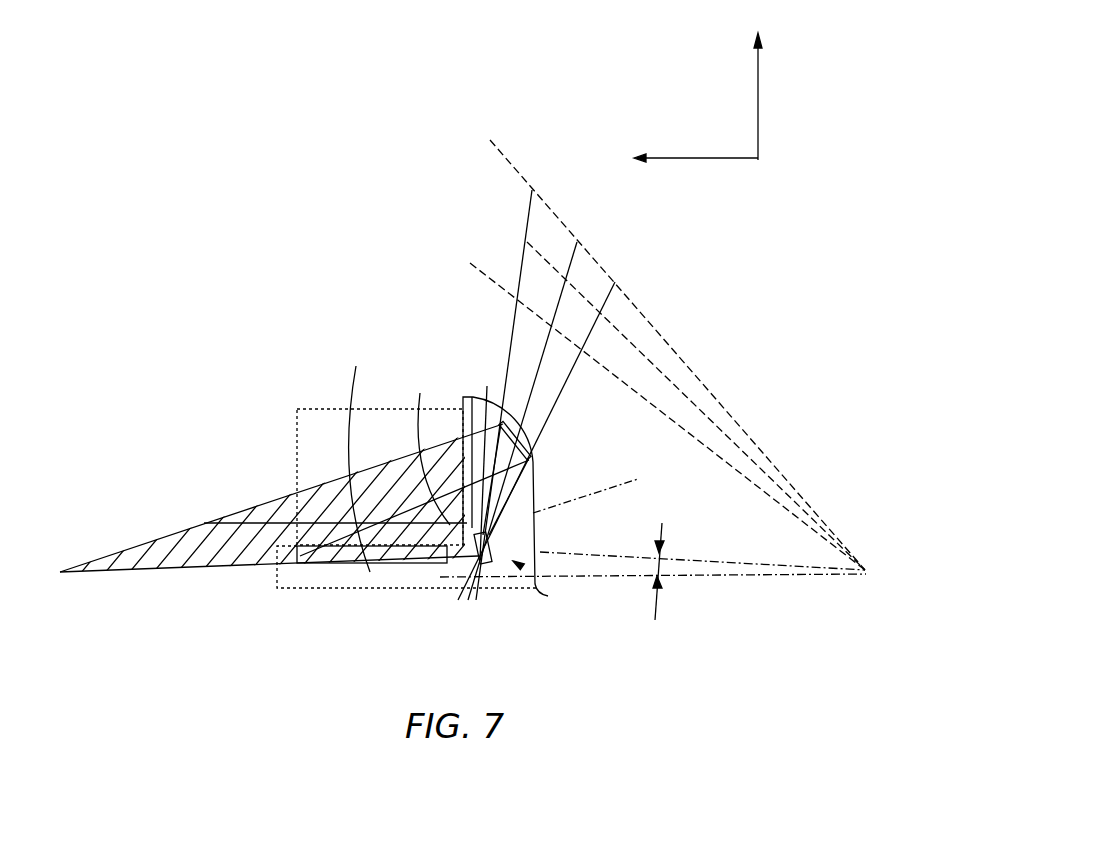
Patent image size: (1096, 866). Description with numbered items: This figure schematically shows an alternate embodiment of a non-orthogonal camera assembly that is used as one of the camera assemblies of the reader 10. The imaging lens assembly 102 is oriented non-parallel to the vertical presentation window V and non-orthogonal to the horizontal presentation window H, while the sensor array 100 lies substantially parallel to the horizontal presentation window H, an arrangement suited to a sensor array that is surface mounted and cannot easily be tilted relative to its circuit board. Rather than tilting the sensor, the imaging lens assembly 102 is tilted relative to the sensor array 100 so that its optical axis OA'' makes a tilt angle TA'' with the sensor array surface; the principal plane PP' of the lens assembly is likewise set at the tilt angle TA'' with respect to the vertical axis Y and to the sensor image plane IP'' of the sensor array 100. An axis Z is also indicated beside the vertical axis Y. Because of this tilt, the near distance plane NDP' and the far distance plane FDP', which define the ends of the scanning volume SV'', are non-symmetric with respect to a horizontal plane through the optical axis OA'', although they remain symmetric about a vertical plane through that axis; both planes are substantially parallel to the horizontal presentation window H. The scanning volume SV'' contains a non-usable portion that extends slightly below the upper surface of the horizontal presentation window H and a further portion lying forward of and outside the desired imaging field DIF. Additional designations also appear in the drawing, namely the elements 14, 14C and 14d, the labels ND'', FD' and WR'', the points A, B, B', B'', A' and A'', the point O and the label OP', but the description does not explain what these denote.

The reader 10 is at (544, 496).
The optical element 14 is at (531, 496).
The optical element portion 14C is at (393, 584).
The surface of optical element 14d is at (530, 488).
The sensor array 100 is at (544, 409).
The imaging lens assembly 102 is at (507, 552).
The desired imaging field DIF is at (297, 409).
The near distance plane NDP' is at (359, 458).
The optical axis OA'' is at (430, 448).
The near distance ND'' is at (414, 492).
The scanning volume SV'' is at (326, 523).
The far distance plane FDP' is at (326, 523).
The far distance FD' is at (368, 584).
The wave retarder WR'' is at (361, 593).
The point B'' is at (316, 497).
The ray B' is at (492, 395).
The ray A' is at (558, 427).
The line A'' is at (596, 489).
The vertical presentation window V is at (484, 463).
The optical path OP' is at (667, 355).
The principal plane PP' is at (653, 550).
The tilt angle TA'' is at (666, 586).
The origin O is at (874, 582).
The sensor image plane IP'' is at (495, 610).
The horizontal presentation window H is at (417, 567).
The point A is at (444, 614).
The point B is at (512, 600).
The vertical axis Y is at (757, 85).
The Z axis Z is at (686, 159).